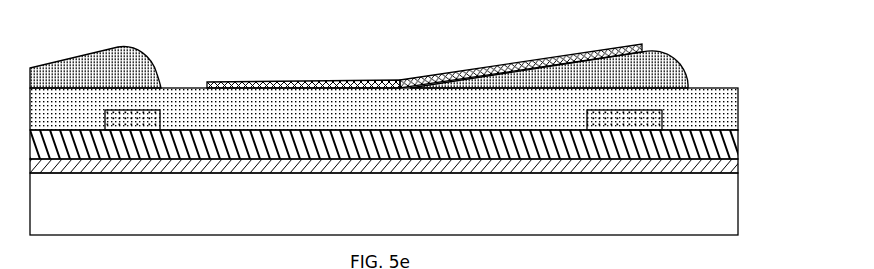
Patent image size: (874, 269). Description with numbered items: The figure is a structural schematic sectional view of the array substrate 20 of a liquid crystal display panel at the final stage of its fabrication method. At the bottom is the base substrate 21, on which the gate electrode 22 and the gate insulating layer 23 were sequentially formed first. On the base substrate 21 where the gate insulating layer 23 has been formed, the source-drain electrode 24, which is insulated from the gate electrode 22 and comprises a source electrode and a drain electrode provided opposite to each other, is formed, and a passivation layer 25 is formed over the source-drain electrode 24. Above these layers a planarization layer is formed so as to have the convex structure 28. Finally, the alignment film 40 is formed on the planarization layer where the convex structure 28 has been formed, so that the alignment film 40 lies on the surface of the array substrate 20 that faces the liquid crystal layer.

The array substrate 20 is at (430, 156).
The base substrate 21 is at (680, 206).
The gate electrode 22 is at (738, 168).
The gate insulating layer 23 is at (738, 145).
The source-drain electrode 24 is at (161, 116).
The passivation layer 25 is at (738, 109).
The convex structure 28 is at (648, 66).
The alignment film 40 is at (297, 82).